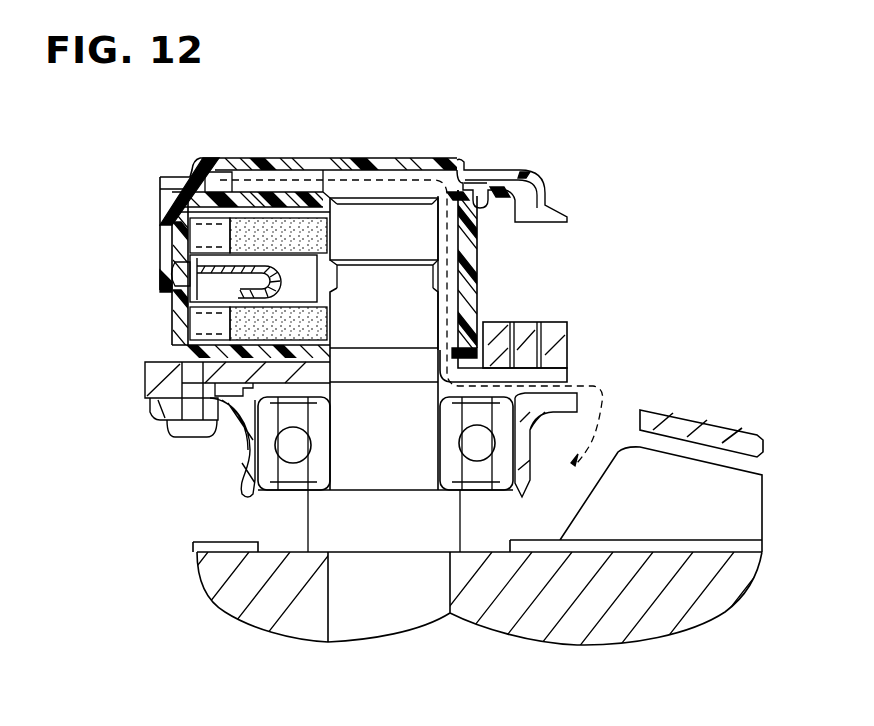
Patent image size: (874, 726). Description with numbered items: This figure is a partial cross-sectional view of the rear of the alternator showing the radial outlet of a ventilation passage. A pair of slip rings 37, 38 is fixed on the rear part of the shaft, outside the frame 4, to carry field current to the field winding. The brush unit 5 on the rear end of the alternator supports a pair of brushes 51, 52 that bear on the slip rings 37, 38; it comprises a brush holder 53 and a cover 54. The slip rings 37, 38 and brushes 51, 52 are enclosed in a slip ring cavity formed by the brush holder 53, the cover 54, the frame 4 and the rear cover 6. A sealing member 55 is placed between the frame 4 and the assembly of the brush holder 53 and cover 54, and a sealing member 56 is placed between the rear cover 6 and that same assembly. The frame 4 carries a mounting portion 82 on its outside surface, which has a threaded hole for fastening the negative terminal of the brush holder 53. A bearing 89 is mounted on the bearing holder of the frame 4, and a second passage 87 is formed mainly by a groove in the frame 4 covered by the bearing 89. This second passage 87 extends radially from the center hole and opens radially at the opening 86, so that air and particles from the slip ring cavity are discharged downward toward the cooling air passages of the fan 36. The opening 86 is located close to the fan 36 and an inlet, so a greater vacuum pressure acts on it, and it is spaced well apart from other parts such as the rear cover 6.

The frame 4 is at (680, 426).
The brush unit 5 is at (165, 296).
The rear cover 6 is at (345, 158).
The fan 36 is at (685, 473).
The slip ring 37 is at (435, 193).
The slip ring 38 is at (400, 313).
The brush 51 is at (365, 223).
The brush 52 is at (283, 223).
The brush holder 53 is at (178, 318).
The cover 54 is at (482, 237).
The sealing member 55 is at (195, 366).
The sealing member 56 is at (180, 200).
The mounting portion 82 is at (560, 320).
The opening 86 is at (503, 427).
The second passage 87 is at (535, 353).
The bearing 89 is at (578, 397).